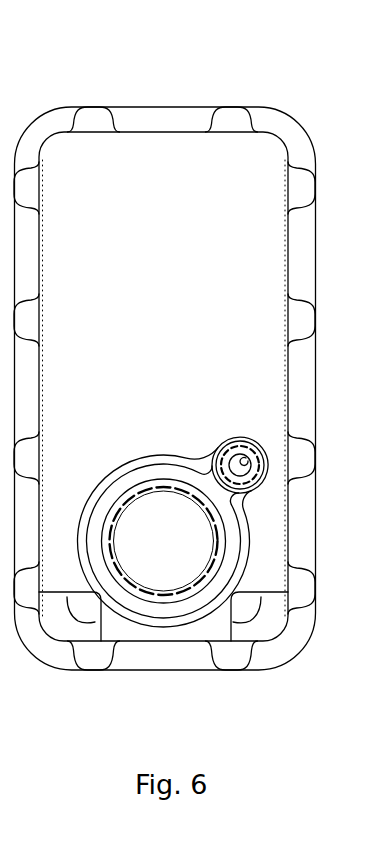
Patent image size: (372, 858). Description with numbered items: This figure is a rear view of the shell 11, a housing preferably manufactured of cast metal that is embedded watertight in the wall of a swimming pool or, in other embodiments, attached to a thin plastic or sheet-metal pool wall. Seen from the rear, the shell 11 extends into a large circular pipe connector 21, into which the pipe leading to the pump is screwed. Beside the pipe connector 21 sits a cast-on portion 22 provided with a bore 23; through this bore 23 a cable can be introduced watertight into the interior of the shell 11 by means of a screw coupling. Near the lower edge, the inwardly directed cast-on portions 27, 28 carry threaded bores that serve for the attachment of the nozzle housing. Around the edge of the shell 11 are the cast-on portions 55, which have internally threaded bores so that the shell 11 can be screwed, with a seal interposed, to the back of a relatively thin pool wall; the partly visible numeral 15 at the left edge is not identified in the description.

The shell 11 is at (253, 107).
The side pockets 15 is at (20, 197).
The cast-on portions 55 is at (218, 117).
The pipe connector 21 is at (148, 612).
The cast-on portion 22 is at (224, 444).
The bore 23 is at (255, 442).
The cast-on portion 27 is at (245, 608).
The cast-on portion 28 is at (83, 605).